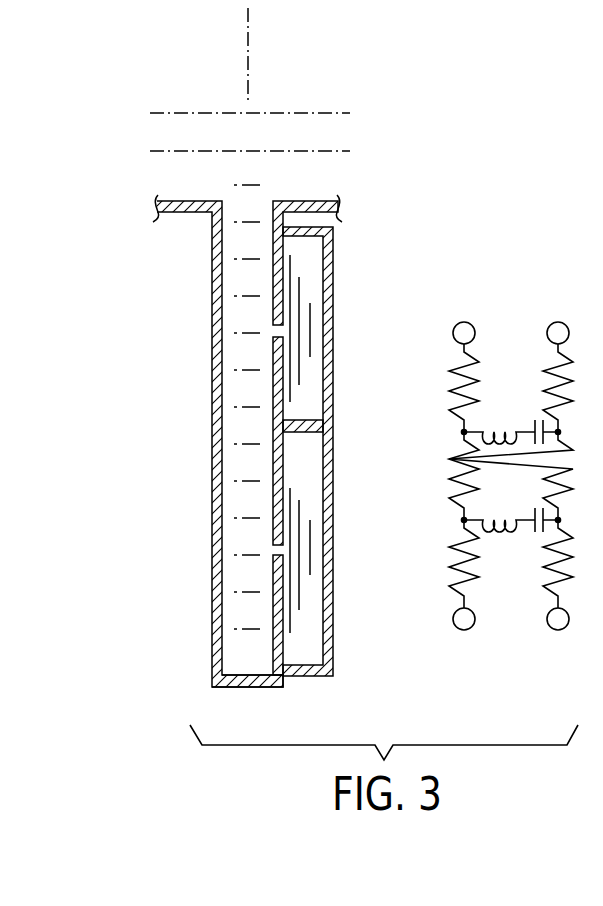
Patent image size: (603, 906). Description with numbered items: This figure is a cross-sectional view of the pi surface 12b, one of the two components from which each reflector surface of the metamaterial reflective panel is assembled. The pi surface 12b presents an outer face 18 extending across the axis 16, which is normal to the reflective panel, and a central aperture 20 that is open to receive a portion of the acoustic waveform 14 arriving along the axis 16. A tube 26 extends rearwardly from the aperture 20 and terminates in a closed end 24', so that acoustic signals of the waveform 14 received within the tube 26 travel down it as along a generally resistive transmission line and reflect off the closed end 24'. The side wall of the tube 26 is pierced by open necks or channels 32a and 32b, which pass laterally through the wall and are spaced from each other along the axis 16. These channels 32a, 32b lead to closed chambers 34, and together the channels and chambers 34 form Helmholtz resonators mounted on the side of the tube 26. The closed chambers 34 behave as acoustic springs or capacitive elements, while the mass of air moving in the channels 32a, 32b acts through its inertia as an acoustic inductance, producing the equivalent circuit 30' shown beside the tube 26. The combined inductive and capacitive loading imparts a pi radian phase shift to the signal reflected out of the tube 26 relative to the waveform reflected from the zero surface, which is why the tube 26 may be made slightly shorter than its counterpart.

The pi surface 12b is at (232, 434).
The acoustic waveform 14 is at (330, 151).
The axis 16 is at (247, 62).
The outer face 18 is at (196, 201).
The central aperture 20 is at (258, 197).
The closed end 24' is at (272, 696).
The tube 26 is at (218, 421).
The equivalent circuit 30' is at (488, 508).
The first channel 32a is at (272, 334).
The second channel 32b is at (272, 551).
The closed chambers 34 is at (312, 266).